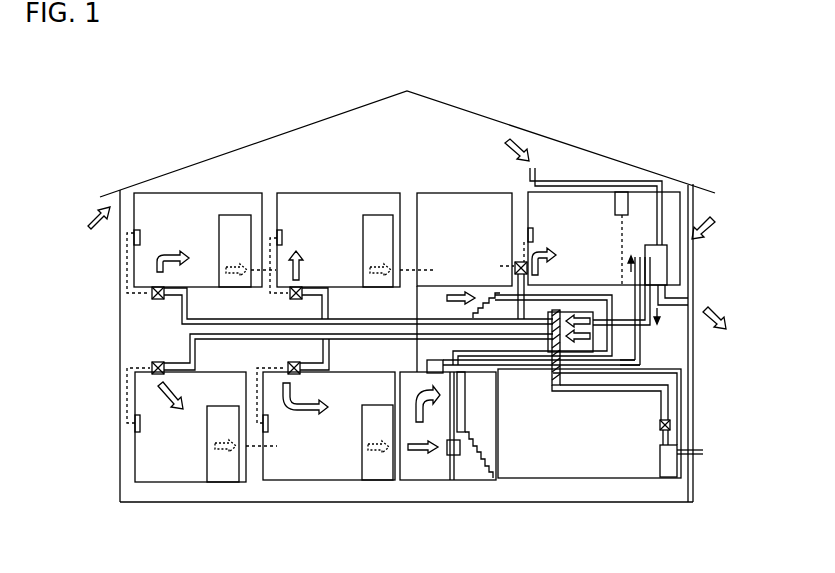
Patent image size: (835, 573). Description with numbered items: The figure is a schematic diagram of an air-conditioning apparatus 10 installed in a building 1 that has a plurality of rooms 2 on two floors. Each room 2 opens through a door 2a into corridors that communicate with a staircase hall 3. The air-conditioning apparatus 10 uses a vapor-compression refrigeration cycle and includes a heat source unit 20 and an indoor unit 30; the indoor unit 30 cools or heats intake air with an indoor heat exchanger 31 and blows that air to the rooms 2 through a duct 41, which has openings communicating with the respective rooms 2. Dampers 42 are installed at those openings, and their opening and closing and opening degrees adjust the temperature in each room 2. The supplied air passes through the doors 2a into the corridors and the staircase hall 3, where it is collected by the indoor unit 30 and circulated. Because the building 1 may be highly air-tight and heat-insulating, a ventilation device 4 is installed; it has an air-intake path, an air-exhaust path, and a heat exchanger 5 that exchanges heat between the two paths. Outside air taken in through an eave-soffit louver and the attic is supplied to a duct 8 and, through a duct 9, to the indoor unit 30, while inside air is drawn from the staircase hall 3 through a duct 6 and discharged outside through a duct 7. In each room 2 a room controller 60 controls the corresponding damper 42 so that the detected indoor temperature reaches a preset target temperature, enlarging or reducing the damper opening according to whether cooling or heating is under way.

The building 1 is at (244, 133).
The room 2 is at (242, 195).
The door 2a is at (217, 232).
The staircase hall 3 is at (452, 197).
The ventilation device 4 is at (678, 257).
The heat exchanger 5 is at (660, 272).
The duct 6 is at (540, 368).
The duct 7 is at (678, 308).
The duct 8 is at (632, 181).
The duct 9 is at (643, 327).
The air-conditioning apparatus 10 is at (634, 346).
The heat source unit 20 is at (660, 455).
The indoor unit 30 is at (577, 315).
The indoor heat exchanger 31 is at (558, 313).
The duct 41 is at (387, 317).
The damper 42 is at (160, 297).
The room controller 60 is at (120, 235).